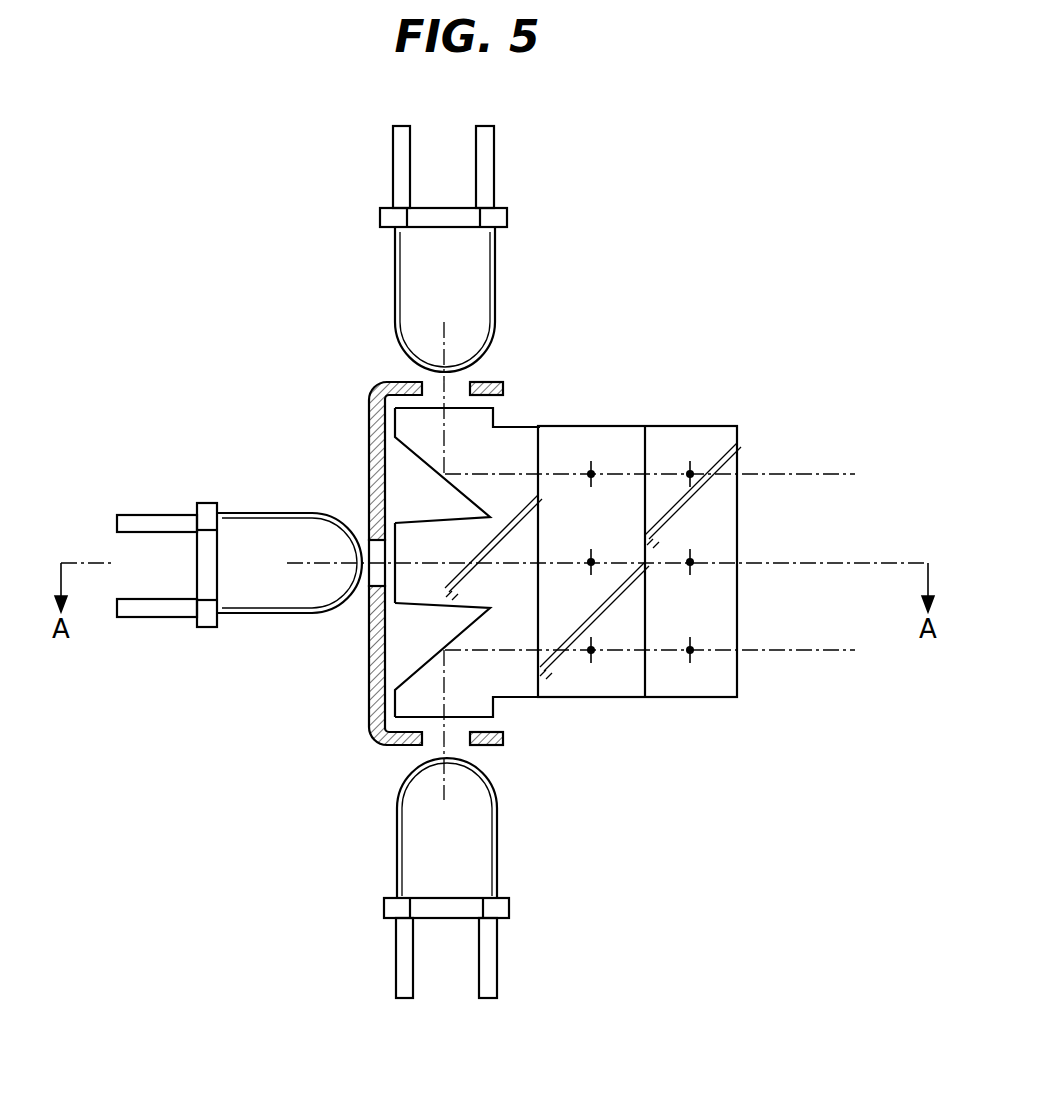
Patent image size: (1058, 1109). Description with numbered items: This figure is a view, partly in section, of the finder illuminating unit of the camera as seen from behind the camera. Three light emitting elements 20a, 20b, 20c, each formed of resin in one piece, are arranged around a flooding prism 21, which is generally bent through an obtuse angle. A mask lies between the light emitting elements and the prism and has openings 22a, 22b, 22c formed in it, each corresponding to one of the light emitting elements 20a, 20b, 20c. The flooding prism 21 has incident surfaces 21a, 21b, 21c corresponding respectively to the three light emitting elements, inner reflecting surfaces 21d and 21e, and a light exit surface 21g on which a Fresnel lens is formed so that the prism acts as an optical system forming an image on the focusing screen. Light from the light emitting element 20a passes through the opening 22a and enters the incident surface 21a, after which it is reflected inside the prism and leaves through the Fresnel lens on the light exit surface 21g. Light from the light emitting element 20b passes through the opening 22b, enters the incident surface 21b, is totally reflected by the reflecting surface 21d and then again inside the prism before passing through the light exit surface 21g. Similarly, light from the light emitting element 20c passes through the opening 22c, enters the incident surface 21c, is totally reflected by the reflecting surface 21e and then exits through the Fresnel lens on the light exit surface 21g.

The light emitting element 20a is at (247, 513).
The light emitting element 20b is at (394, 268).
The light emitting element 20c is at (404, 846).
The flooding prism 21 is at (616, 426).
The incident surface 21a is at (366, 603).
The incident surface 21b is at (474, 403).
The incident surface 21c is at (484, 720).
The reflecting surface 21d is at (412, 452).
The reflecting surface 21e is at (417, 668).
The light exit surface 21g is at (687, 685).
The opening 22a is at (367, 542).
The opening 22b is at (432, 387).
The opening 22c is at (435, 738).